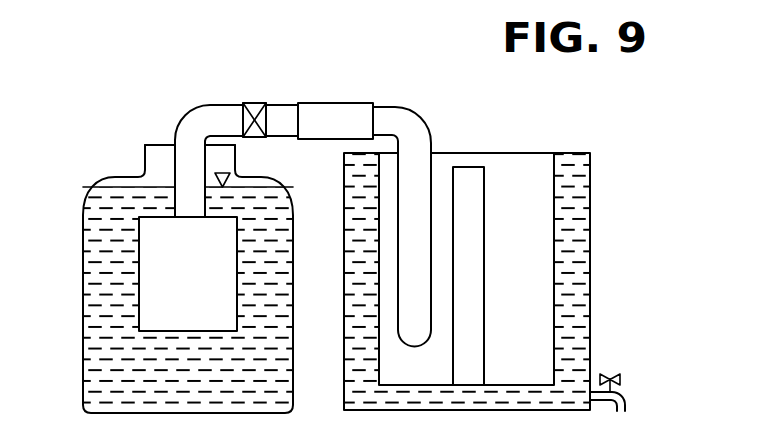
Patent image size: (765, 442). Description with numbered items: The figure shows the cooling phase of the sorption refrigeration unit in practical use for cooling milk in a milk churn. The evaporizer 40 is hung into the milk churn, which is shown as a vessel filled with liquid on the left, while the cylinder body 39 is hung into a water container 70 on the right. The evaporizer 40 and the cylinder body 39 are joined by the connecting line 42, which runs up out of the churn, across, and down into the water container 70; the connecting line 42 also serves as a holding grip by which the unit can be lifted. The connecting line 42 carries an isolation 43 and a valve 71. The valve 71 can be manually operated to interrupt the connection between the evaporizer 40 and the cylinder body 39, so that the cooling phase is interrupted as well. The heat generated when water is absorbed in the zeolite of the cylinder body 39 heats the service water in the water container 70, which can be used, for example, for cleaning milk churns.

The cylinder body 39 is at (516, 172).
The evaporizer 40 is at (188, 274).
The connecting line 42 is at (412, 130).
The isolation 43 is at (343, 113).
The water container 70 is at (573, 257).
The valve 71 is at (256, 103).